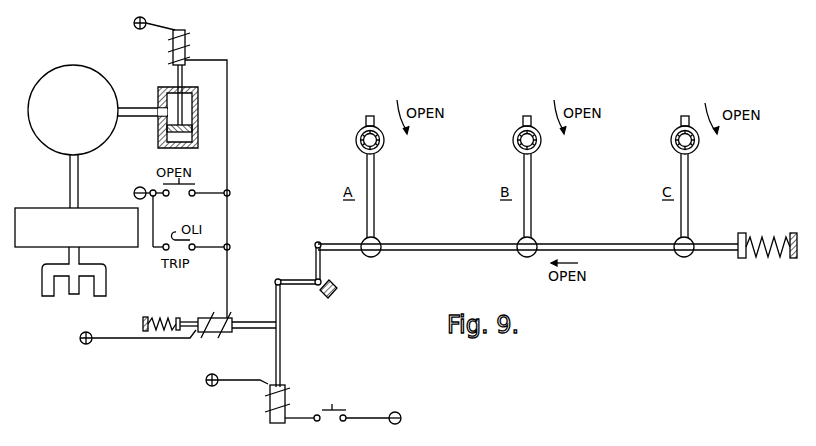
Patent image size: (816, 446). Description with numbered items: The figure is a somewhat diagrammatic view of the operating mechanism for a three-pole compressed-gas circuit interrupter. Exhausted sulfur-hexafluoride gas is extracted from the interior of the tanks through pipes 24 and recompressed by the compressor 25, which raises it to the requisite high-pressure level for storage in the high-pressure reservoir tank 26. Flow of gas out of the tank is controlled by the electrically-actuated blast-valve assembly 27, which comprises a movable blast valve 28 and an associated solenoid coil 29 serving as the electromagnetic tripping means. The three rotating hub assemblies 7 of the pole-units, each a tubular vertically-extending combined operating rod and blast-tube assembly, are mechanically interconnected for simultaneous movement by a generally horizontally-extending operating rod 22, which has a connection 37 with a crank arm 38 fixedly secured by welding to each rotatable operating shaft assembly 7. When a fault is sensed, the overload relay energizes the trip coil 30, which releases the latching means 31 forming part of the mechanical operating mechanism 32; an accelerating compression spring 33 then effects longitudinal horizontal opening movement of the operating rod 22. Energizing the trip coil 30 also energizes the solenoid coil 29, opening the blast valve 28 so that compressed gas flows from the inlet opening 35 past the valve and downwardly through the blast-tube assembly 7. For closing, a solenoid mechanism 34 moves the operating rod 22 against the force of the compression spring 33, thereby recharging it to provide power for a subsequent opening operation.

The rotating hub assembly 7 is at (199, 104).
The operating rod 22 is at (470, 246).
The pipes 24 is at (54, 293).
The compressor 25 is at (47, 205).
The high-pressure reservoir tank 26 is at (66, 65).
The blast-valve assembly 27 is at (163, 83).
The blast valve 28 is at (168, 129).
The solenoid coil 29 is at (191, 44).
The trip coil 30 is at (215, 317).
The latching means 31 is at (267, 320).
The mechanical operating mechanism 32 is at (318, 336).
The accelerating compression spring 33 is at (748, 236).
The solenoid mechanism 34 is at (255, 411).
The inlet opening 35 is at (141, 106).
The connection 37 is at (381, 242).
The crank arm 38 is at (376, 213).